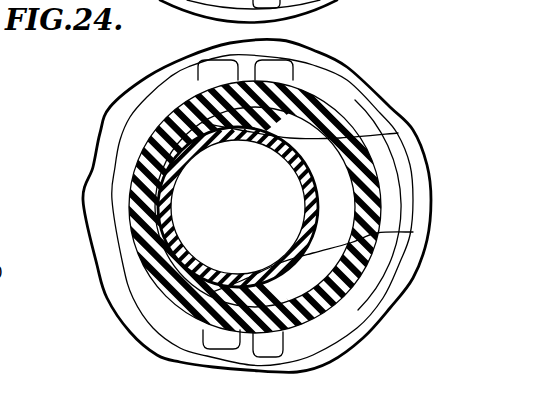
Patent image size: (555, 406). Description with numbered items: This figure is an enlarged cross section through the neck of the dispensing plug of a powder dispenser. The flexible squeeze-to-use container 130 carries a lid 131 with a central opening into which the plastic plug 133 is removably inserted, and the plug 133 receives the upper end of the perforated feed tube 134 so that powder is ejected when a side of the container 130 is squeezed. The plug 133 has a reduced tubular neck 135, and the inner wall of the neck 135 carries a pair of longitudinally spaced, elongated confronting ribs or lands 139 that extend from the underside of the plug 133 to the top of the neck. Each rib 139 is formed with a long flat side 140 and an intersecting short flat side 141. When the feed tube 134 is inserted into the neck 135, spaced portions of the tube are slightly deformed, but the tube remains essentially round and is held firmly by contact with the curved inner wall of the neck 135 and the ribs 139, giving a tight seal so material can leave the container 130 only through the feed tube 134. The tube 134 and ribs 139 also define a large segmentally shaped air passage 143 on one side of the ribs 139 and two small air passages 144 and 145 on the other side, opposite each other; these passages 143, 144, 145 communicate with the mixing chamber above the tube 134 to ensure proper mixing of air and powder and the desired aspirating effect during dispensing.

The flexible squeeze-to-use container 130 is at (168, 362).
The lid 131 is at (408, 262).
The plastic plug 133 is at (389, 306).
The perforated feed tube 134 is at (157, 195).
The reduced tubular neck 135 is at (268, 357).
The ribs or lands 139 is at (398, 133).
The long flat side 140 is at (197, 90).
The short flat side 141 is at (337, 130).
The segmentally shaped air passage 143 is at (342, 217).
The small air passage 144 is at (200, 332).
The small air passage 145 is at (200, 127).